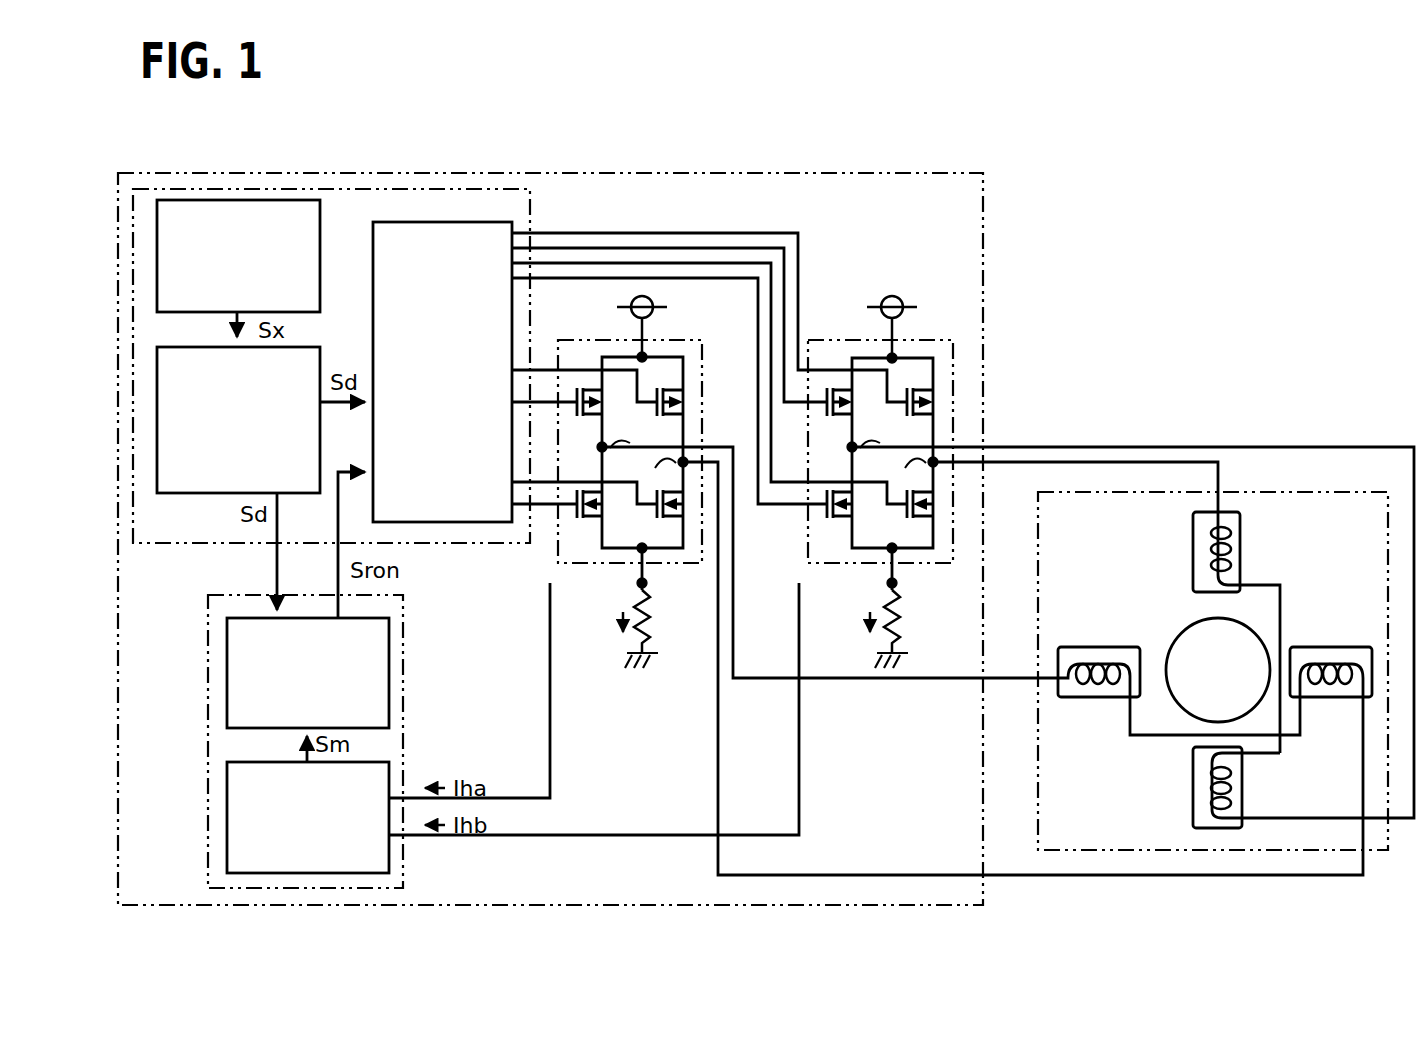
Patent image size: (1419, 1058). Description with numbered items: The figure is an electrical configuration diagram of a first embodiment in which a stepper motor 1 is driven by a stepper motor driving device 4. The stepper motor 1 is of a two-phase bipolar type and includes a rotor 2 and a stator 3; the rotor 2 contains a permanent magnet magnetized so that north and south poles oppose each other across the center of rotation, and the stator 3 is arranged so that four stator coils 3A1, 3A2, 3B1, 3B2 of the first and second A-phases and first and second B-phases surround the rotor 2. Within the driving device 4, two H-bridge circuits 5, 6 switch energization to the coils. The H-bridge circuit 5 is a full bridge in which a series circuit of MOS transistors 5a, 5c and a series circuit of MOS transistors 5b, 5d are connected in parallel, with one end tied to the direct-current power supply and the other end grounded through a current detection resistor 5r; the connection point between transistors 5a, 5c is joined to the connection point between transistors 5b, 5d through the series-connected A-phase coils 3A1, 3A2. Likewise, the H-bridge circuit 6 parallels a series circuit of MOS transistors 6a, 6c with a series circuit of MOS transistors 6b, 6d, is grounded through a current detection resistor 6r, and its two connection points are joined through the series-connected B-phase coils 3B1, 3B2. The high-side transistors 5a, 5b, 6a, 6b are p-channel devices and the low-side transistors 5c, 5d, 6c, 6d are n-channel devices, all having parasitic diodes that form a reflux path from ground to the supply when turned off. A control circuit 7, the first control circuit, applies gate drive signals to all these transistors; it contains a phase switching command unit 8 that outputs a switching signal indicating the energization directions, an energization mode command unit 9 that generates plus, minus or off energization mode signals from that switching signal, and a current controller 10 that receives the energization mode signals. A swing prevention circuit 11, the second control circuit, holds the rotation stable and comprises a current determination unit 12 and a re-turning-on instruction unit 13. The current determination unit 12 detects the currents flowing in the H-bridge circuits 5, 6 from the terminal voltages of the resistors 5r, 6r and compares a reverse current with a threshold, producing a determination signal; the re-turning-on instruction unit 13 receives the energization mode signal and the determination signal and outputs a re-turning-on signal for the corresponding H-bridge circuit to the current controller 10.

The stepper motor 1 is at (1278, 492).
The rotor 2 is at (1190, 635).
The stator 3 is at (1250, 543).
The stator coil 3A1 is at (1082, 647).
The stator coil 3A2 is at (1332, 647).
The stator coil 3B1 is at (1193, 547).
The stator coil 3B2 is at (1193, 795).
The stepper motor driving device 4 is at (536, 173).
The H-bridge circuit 5 is at (629, 504).
The MOS transistor 5a is at (590, 388).
The MOS transistor 5b is at (675, 398).
The MOS transistor 5c is at (586, 520).
The MOS transistor 5d is at (672, 520).
The current detection resistor 5r is at (652, 630).
The H-bridge circuit 6 is at (898, 482).
The MOS transistor 6a is at (840, 388).
The MOS transistor 6b is at (935, 400).
The MOS transistor 6c is at (836, 520).
The MOS transistor 6d is at (935, 503).
The current detection resistor 6r is at (903, 630).
The control circuit 7 is at (425, 189).
The phase switching command unit 8 is at (245, 200).
The energization mode command unit 9 is at (174, 493).
The current controller 10 is at (465, 522).
The swing prevention circuit 11 is at (415, 868).
The current determination unit 12 is at (227, 824).
The re-turning-on instruction unit 13 is at (227, 678).